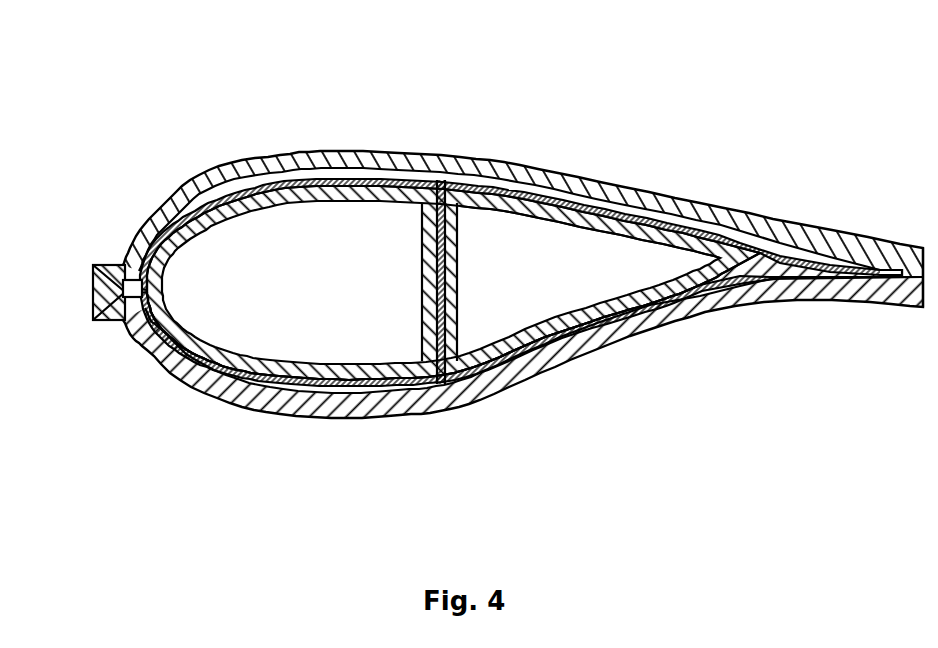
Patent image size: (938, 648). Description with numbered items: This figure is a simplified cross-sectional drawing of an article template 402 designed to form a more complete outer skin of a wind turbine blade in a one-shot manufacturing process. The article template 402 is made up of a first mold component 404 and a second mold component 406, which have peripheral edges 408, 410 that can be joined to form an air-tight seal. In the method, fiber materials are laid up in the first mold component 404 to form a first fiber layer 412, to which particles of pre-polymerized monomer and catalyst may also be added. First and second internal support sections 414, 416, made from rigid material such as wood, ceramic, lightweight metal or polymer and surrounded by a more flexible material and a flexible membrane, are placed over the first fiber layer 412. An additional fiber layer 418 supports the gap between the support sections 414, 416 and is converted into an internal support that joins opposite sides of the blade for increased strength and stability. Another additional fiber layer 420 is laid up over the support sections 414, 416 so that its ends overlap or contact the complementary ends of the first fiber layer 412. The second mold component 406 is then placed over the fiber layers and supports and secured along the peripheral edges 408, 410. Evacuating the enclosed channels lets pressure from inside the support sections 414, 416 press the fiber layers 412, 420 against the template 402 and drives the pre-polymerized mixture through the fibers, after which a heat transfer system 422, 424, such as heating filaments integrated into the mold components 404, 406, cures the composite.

The article template 402 is at (793, 127).
The first mold component 404 is at (386, 404).
The second mold component 406 is at (540, 170).
The peripheral edge 408 is at (101, 265).
The peripheral edge 410 is at (100, 321).
The first fiber layer 412 is at (243, 374).
The first internal support section 414 is at (294, 203).
The second internal support section 416 is at (566, 217).
The additional fiber layer 418 is at (458, 279).
The additional fiber layer 420 is at (627, 204).
The heat transfer system 422 is at (317, 398).
The heat transfer system 424 is at (703, 214).